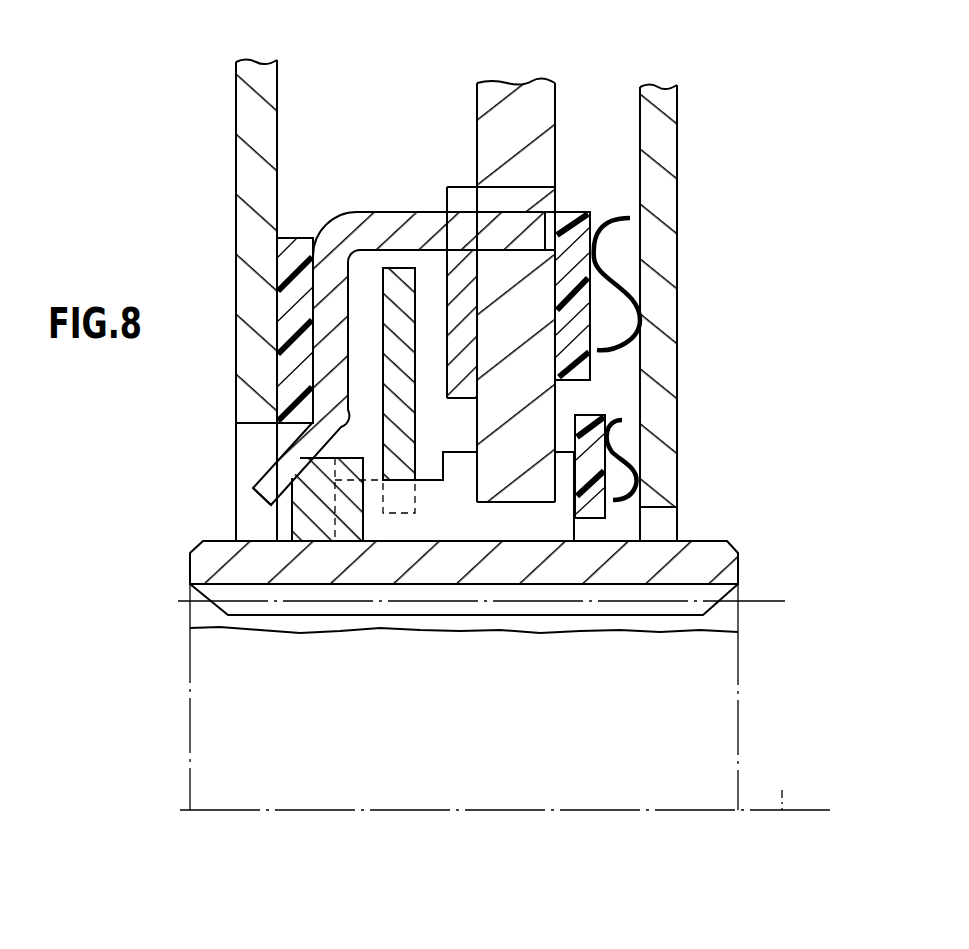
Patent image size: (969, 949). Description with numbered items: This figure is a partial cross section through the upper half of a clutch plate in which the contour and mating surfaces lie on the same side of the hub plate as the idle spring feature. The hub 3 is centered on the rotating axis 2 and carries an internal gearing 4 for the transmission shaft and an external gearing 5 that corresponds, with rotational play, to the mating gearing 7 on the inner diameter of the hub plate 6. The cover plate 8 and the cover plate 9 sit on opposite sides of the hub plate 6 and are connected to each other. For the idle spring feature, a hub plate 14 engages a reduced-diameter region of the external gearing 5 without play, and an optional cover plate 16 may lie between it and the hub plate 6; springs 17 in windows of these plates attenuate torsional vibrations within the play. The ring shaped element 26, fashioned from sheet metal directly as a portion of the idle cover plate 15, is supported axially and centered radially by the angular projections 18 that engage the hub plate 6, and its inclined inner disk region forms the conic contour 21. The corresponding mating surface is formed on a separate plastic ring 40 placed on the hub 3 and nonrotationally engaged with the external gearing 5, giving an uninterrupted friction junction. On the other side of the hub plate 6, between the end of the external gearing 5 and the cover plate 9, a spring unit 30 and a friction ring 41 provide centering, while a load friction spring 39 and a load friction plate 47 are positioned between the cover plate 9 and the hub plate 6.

The rotating axis 2 is at (783, 790).
The hub 3 is at (713, 570).
The internal gearing 4 is at (692, 613).
The external gearing 5 is at (552, 518).
The hub plate 6 is at (525, 120).
The mating gearing 7 is at (513, 505).
The cover plate 8 is at (262, 138).
The cover plate 9 is at (662, 122).
The hub plate 14 is at (395, 339).
The cover plate 15 is at (335, 265).
The cover plate 16 is at (462, 372).
The springs 17 is at (363, 300).
The angular projections 18 is at (387, 222).
The contour 21 is at (286, 470).
The ring shaped element 26 is at (335, 417).
The spring unit 30 is at (625, 455).
The load friction spring 39 is at (618, 280).
The plastic ring 40 is at (312, 510).
The friction ring 41 is at (592, 490).
The load friction plate 47 is at (582, 328).